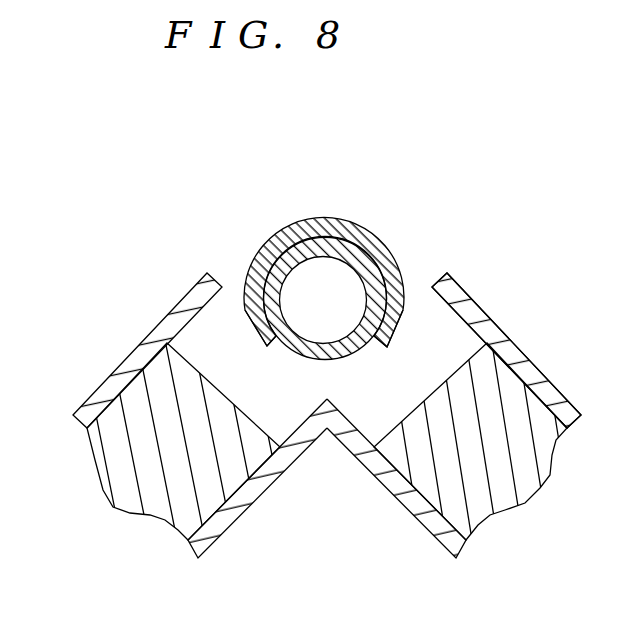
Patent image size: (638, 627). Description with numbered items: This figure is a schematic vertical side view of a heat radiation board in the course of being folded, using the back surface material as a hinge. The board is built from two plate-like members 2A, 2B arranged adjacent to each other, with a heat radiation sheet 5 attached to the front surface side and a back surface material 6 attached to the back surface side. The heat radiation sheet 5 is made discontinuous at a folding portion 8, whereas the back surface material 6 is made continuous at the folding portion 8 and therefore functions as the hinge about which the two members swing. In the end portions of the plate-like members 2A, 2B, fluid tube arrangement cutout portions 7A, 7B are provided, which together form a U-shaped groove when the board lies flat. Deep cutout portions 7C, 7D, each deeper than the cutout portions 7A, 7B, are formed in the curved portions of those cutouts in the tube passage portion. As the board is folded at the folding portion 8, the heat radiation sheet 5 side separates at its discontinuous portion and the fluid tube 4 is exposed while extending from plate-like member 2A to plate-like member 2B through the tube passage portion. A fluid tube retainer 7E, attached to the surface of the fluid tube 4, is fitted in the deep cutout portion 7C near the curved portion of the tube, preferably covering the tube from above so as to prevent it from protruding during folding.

The plate-like member 2A is at (158, 488).
The plate-like member 2B is at (487, 488).
The fluid tube 4 is at (348, 240).
The heat radiation sheet 5 is at (517, 355).
The back surface material 6 is at (243, 513).
The fluid tube arrangement cutout portion 7A is at (235, 312).
The fluid tube arrangement cutout portion 7B is at (414, 308).
The deep cutout portion 7C is at (193, 355).
The deep cutout portion 7D is at (457, 355).
The fluid tube retainer 7E is at (314, 225).
The folding portion 8 is at (327, 448).